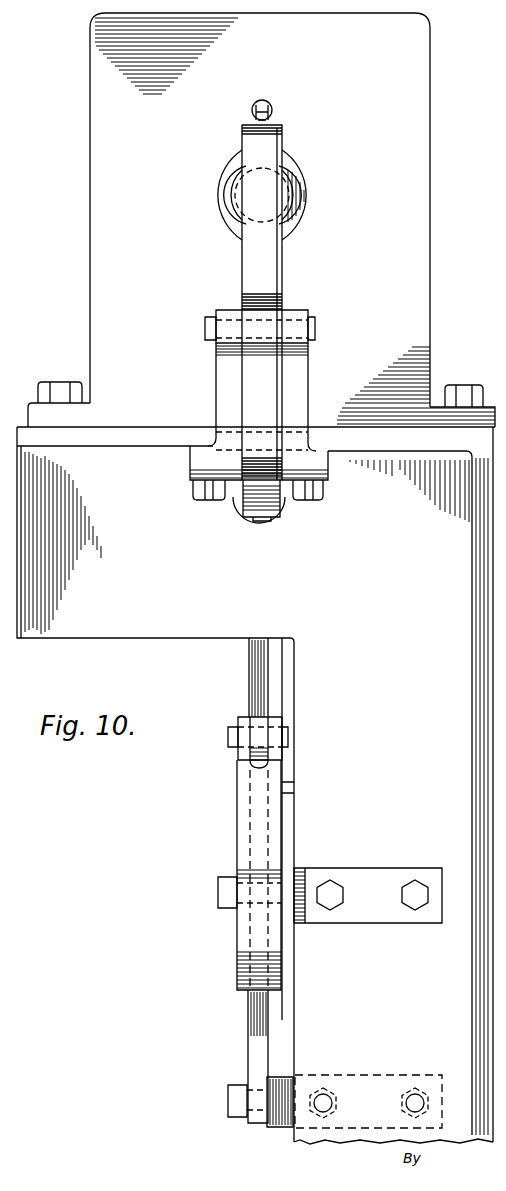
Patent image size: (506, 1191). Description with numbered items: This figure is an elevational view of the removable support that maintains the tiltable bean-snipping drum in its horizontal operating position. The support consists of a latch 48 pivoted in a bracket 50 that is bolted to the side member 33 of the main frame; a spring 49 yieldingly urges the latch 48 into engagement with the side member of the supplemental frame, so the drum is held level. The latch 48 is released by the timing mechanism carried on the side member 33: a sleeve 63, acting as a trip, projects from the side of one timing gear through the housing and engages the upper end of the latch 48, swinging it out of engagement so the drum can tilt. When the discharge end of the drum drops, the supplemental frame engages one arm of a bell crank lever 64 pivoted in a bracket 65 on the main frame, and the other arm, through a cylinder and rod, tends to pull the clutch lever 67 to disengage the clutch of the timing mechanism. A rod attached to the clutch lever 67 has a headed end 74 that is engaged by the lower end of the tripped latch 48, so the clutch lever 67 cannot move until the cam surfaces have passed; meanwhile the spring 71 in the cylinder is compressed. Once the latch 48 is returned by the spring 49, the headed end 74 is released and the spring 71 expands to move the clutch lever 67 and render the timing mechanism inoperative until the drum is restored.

The side member of the main frame 33 is at (378, 447).
The latch 48 is at (283, 512).
The spring 49 is at (274, 113).
The bracket 50 is at (300, 318).
The sleeve 63 is at (300, 200).
The bell crank lever 64 is at (248, 942).
The bracket 65 is at (292, 925).
The clutch lever 67 is at (262, 678).
The spring 71 is at (268, 718).
The headed end of rod 74 is at (262, 522).